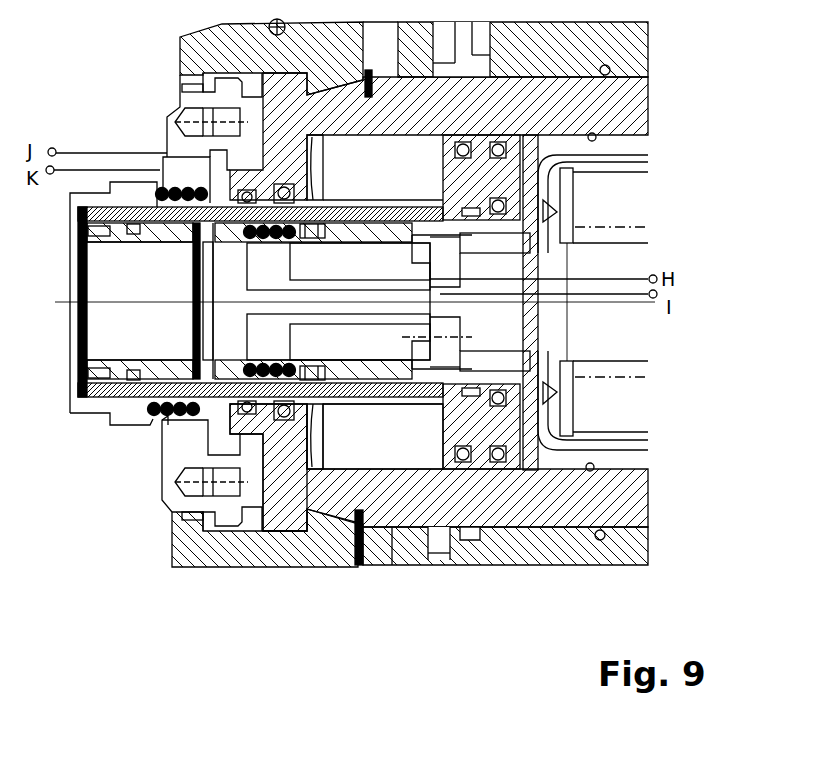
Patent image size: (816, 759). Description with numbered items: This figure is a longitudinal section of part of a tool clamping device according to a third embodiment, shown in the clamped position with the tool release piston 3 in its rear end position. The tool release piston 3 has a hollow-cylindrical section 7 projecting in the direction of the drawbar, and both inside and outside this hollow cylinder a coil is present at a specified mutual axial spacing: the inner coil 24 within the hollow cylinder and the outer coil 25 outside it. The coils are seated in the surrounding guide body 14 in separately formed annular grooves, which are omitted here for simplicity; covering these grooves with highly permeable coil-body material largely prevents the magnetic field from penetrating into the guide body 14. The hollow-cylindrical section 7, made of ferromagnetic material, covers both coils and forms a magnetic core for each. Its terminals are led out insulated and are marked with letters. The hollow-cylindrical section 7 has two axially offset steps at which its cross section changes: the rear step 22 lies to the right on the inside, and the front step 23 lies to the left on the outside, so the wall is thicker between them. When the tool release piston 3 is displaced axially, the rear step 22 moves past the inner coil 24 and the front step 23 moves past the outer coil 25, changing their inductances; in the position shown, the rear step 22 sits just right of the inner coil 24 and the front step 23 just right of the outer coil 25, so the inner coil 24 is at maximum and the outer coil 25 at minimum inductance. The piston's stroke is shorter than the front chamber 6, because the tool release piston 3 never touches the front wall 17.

The tool release piston 3 is at (430, 478).
The front chamber 6 is at (350, 440).
The hollow-cylindrical section 7 is at (123, 408).
The guide body 14 is at (163, 232).
The front wall 17 is at (281, 460).
The rear step 22 is at (307, 236).
The front step 23 is at (207, 195).
The inner coil 24 is at (252, 240).
The outer coil 25 is at (182, 188).